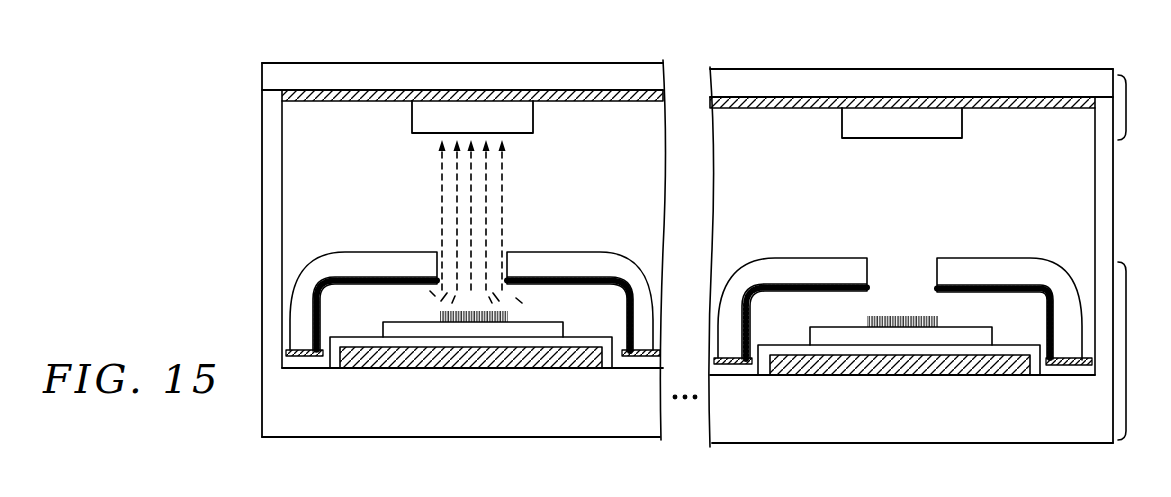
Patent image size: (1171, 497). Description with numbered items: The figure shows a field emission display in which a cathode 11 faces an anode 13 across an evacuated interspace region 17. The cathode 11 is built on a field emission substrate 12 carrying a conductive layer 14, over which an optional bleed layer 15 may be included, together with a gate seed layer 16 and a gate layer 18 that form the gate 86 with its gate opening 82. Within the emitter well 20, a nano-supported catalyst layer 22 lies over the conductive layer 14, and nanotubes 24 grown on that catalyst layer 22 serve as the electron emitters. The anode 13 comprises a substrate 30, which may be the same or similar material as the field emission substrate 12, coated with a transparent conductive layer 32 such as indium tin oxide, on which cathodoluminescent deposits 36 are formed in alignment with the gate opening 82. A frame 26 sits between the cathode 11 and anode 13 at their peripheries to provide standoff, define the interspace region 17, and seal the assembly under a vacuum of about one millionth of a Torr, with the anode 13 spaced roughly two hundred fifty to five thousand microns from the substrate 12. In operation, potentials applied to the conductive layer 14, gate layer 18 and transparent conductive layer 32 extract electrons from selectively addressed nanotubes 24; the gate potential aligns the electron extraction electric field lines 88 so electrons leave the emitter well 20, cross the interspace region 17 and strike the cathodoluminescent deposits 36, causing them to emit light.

The cathode 11 is at (1135, 351).
The field emission substrate 12 is at (497, 436).
The anode 13 is at (1135, 107).
The conductive layer 14 is at (545, 368).
The bleed layer 15 is at (625, 372).
The gate seed layer 16 is at (385, 278).
The interspace region 17 is at (296, 229).
The gate layer 18 is at (578, 263).
The emitter well 20 is at (540, 307).
The nano-supported catalyst layer 22 is at (381, 334).
The nanotubes 24 is at (440, 317).
The frame 26 is at (272, 169).
The substrate 30 is at (572, 76).
The transparent conductive layer 32 is at (366, 101).
The cathodoluminescent deposit 36 is at (413, 136).
The gate opening 82 is at (500, 257).
The gate 86 is at (578, 236).
The electron extraction electric field lines 88 is at (508, 205).